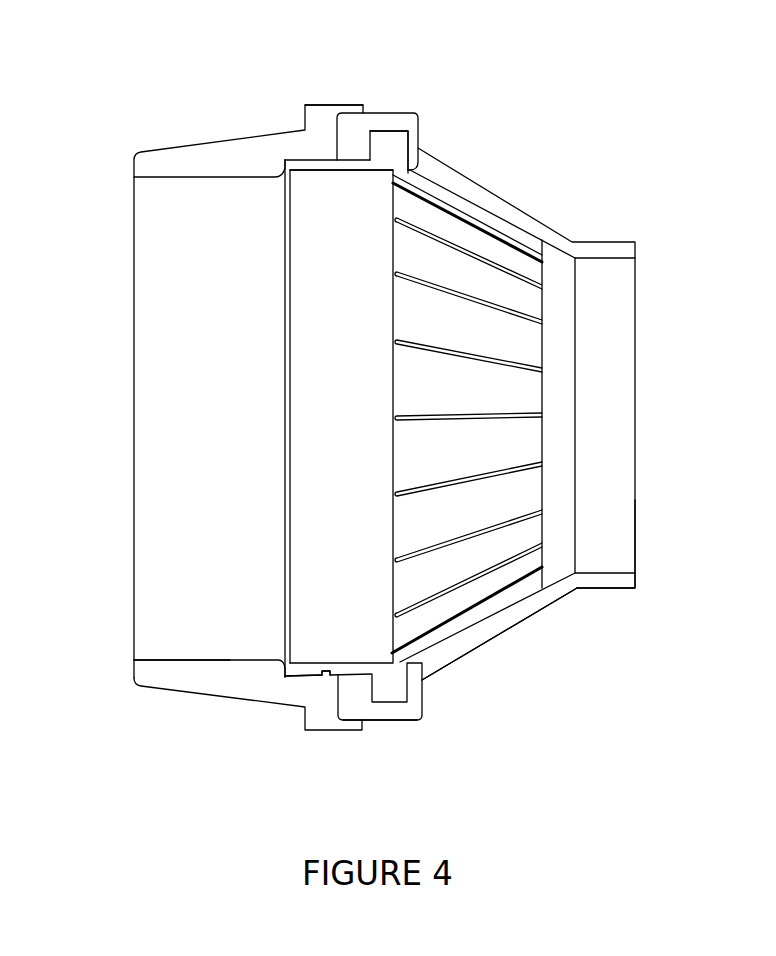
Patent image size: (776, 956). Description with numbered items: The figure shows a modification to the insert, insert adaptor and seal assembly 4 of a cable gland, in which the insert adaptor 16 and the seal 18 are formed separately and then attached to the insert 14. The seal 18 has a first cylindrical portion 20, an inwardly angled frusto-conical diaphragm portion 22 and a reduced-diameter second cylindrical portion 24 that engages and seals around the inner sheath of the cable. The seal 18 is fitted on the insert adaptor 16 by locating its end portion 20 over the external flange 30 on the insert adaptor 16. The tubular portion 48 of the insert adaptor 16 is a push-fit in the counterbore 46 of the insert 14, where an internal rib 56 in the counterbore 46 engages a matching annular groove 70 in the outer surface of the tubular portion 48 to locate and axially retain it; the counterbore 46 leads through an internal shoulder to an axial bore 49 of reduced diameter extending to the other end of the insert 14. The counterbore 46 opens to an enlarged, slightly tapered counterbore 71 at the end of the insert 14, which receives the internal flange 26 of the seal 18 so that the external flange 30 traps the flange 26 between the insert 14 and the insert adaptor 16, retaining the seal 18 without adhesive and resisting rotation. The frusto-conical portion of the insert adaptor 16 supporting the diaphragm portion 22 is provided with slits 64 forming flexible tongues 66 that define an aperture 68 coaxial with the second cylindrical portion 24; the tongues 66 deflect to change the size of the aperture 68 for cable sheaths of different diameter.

The insert, insert adaptor and seal assembly 4 is at (520, 138).
The insert 14 is at (202, 163).
The insert adaptor 16 is at (397, 152).
The seal 18 is at (565, 232).
The first cylindrical portion 20 is at (393, 725).
The frusto-conical diaphragm portion 22 is at (507, 627).
The second cylindrical portion 24 is at (623, 590).
The internal flange 26 is at (353, 145).
The external flange 30 is at (395, 692).
The counterbore 46 is at (312, 160).
The tubular portion 48 is at (303, 667).
The axial bore 49 is at (160, 660).
The internal rib 56 is at (327, 674).
The slits 64 is at (523, 415).
The flexible tongues 66 is at (523, 493).
The aperture 68 is at (548, 343).
The annular groove 70 is at (328, 162).
The enlarged counterbore 71 is at (351, 110).